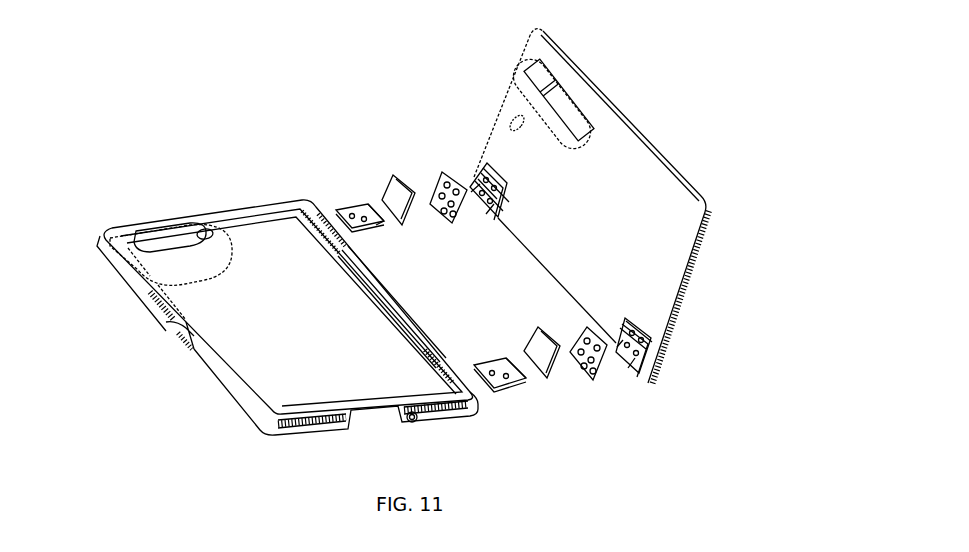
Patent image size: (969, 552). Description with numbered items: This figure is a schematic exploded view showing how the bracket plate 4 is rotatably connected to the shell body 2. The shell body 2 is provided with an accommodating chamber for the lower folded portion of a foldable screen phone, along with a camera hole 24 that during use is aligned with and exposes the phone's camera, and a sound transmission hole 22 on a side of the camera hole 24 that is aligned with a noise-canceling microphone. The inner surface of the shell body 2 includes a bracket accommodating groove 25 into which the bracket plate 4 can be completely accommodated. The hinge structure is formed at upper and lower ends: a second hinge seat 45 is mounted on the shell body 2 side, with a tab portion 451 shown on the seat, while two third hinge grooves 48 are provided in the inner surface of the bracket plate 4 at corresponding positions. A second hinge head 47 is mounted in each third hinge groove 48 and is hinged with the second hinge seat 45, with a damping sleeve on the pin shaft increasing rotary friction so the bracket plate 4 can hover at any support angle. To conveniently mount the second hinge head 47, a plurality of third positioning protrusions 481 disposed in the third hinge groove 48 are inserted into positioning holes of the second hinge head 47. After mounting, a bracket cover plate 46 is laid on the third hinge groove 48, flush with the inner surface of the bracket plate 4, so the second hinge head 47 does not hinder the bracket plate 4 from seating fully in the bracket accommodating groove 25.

The shell body 2 is at (234, 386).
The sound transmission hole 22 is at (207, 232).
The camera hole 24 is at (172, 261).
The bracket accommodating groove 25 is at (250, 333).
The bracket plate 4 is at (650, 185).
The second hinge seat 45 is at (343, 208).
The bracket tab 451 is at (386, 229).
The bracket cover plate 46 is at (398, 191).
The second hinge head 47 is at (447, 172).
The third hinge groove 48 is at (494, 165).
The third positioning protrusion 481 is at (503, 195).